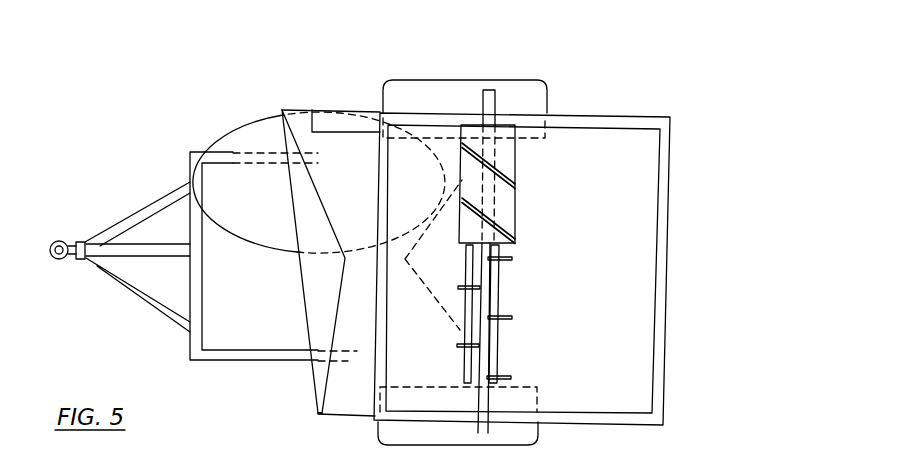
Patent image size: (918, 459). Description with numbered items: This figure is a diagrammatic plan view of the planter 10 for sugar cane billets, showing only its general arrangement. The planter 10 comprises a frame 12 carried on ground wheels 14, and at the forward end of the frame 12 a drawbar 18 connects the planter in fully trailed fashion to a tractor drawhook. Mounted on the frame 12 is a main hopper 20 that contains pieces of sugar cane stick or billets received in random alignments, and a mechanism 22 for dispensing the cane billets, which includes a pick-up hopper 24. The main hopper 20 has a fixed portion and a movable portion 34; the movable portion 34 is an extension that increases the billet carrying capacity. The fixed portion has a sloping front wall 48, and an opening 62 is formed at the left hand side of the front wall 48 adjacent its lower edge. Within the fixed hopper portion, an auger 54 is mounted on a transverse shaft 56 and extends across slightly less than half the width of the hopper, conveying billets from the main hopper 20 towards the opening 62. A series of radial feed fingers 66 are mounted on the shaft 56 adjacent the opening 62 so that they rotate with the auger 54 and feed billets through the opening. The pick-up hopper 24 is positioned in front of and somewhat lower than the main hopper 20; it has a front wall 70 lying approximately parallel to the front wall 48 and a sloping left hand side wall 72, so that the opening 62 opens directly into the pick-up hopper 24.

The planter 10 is at (134, 365).
The frame 12 is at (207, 134).
The ground wheels 14 is at (540, 102).
The drawbar 18 is at (123, 283).
The main hopper 20 is at (669, 117).
The mechanism for dispensing the cane billets 22 is at (259, 136).
The pick-up hopper 24 is at (317, 392).
The movable portion 34 is at (633, 337).
The sloping front wall 48 is at (397, 328).
The auger 54 is at (516, 203).
The shaft 56 is at (489, 350).
The opening 62 is at (462, 329).
The radial feed fingers 66 is at (507, 318).
The front wall 70 is at (305, 300).
The left hand side wall 72 is at (340, 400).